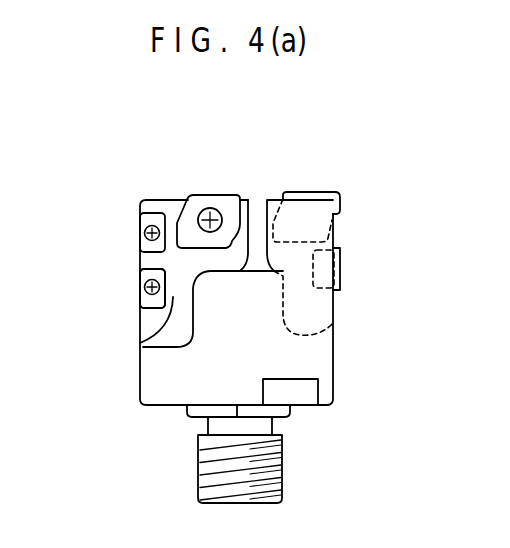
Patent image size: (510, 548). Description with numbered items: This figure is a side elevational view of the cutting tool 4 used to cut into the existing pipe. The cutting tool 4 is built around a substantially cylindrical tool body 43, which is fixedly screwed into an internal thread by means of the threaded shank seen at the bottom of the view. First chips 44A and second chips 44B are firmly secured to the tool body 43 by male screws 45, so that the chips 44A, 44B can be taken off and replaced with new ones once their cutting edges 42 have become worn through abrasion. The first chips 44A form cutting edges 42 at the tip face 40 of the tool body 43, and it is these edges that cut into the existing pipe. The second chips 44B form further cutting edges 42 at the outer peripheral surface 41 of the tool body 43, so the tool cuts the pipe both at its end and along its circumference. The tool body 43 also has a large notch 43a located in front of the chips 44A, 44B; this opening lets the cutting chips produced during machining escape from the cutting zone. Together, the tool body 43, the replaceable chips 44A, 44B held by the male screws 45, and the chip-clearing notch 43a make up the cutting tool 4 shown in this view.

The cutting tool 4 is at (269, 296).
The tip face 40 is at (160, 198).
The outer peripheral surface 41 is at (140, 323).
The cutting edges 42 is at (196, 194).
The tool body 43 is at (317, 348).
The notch 43a is at (142, 342).
The first chips 44A is at (228, 201).
The second chips 44B is at (140, 270).
The male screws 45 is at (210, 208).